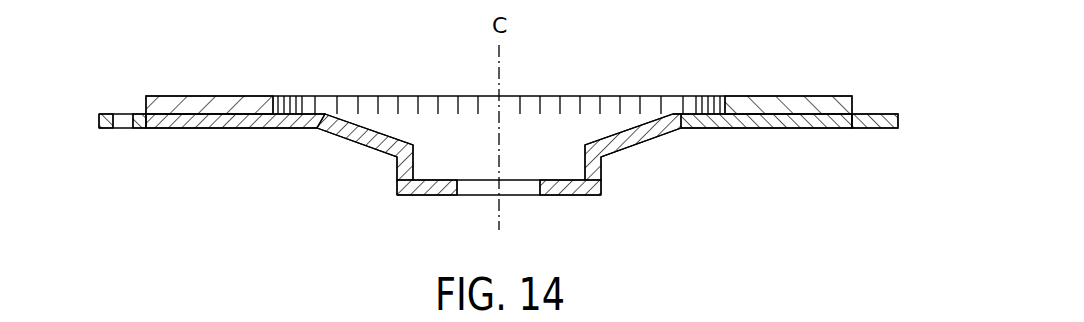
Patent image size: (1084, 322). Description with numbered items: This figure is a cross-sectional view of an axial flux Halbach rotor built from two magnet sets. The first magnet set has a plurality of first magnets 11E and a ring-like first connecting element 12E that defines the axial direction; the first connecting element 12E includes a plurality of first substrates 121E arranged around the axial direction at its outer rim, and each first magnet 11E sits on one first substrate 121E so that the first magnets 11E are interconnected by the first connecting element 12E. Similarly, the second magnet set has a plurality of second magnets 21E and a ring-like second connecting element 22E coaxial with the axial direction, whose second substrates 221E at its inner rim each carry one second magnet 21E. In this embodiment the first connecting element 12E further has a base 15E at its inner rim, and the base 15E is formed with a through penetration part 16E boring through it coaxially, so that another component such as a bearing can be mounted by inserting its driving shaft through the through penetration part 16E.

The first magnets 11E is at (205, 95).
The second magnets 21E is at (795, 98).
The first connecting element 12E is at (702, 130).
The second connecting element 22E is at (105, 130).
The first substrates 121E is at (205, 130).
The second substrates 221E is at (790, 130).
The base 15E is at (642, 138).
The through penetration part 16E is at (517, 193).